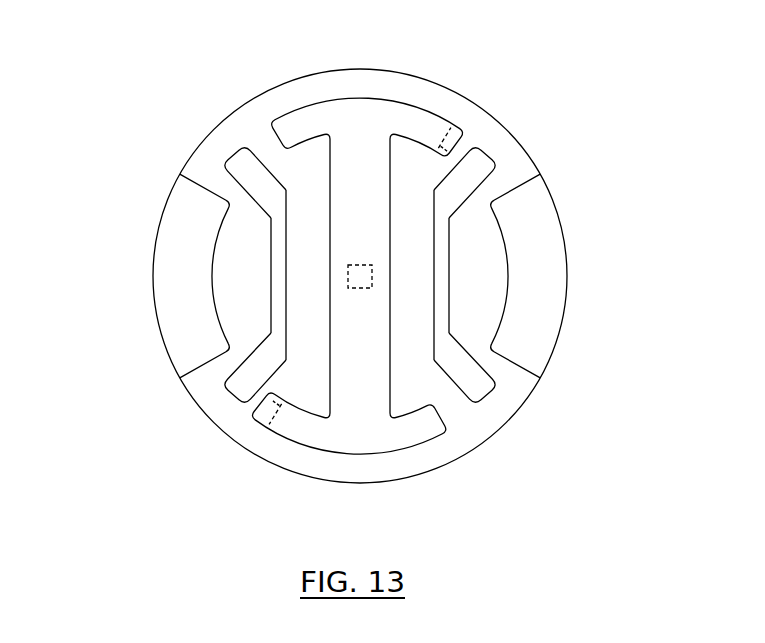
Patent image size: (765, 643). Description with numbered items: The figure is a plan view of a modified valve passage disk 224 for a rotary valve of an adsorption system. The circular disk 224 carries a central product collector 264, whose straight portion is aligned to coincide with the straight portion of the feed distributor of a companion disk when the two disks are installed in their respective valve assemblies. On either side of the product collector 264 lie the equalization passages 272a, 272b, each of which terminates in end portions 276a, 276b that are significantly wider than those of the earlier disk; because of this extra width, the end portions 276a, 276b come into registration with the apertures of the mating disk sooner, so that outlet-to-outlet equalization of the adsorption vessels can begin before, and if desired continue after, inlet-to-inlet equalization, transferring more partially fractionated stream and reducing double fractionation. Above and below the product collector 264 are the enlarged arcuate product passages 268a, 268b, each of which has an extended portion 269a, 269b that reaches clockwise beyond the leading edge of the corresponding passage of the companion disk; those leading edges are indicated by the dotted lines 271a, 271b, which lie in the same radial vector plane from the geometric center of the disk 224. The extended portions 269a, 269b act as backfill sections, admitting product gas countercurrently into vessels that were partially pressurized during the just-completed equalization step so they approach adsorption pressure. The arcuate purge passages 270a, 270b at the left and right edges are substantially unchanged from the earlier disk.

The valve passage disk 224 is at (360, 260).
The product collector 264 is at (378, 208).
The arcuate product passage 268a is at (387, 131).
The arcuate product passage 268b is at (387, 442).
The extended portion of product passage 269a is at (501, 112).
The extended portion of product passage 269b is at (215, 443).
The arcuate purge passage 270a is at (180, 277).
The arcuate purge passage 270b is at (545, 279).
The dotted line 271a is at (391, 88).
The dotted line 271b is at (267, 459).
The equalization passage 272a is at (183, 275).
The equalization passage 272b is at (547, 275).
The end portion of equalization passage 276a is at (199, 265).
The end portion of equalization passage 276b is at (525, 286).